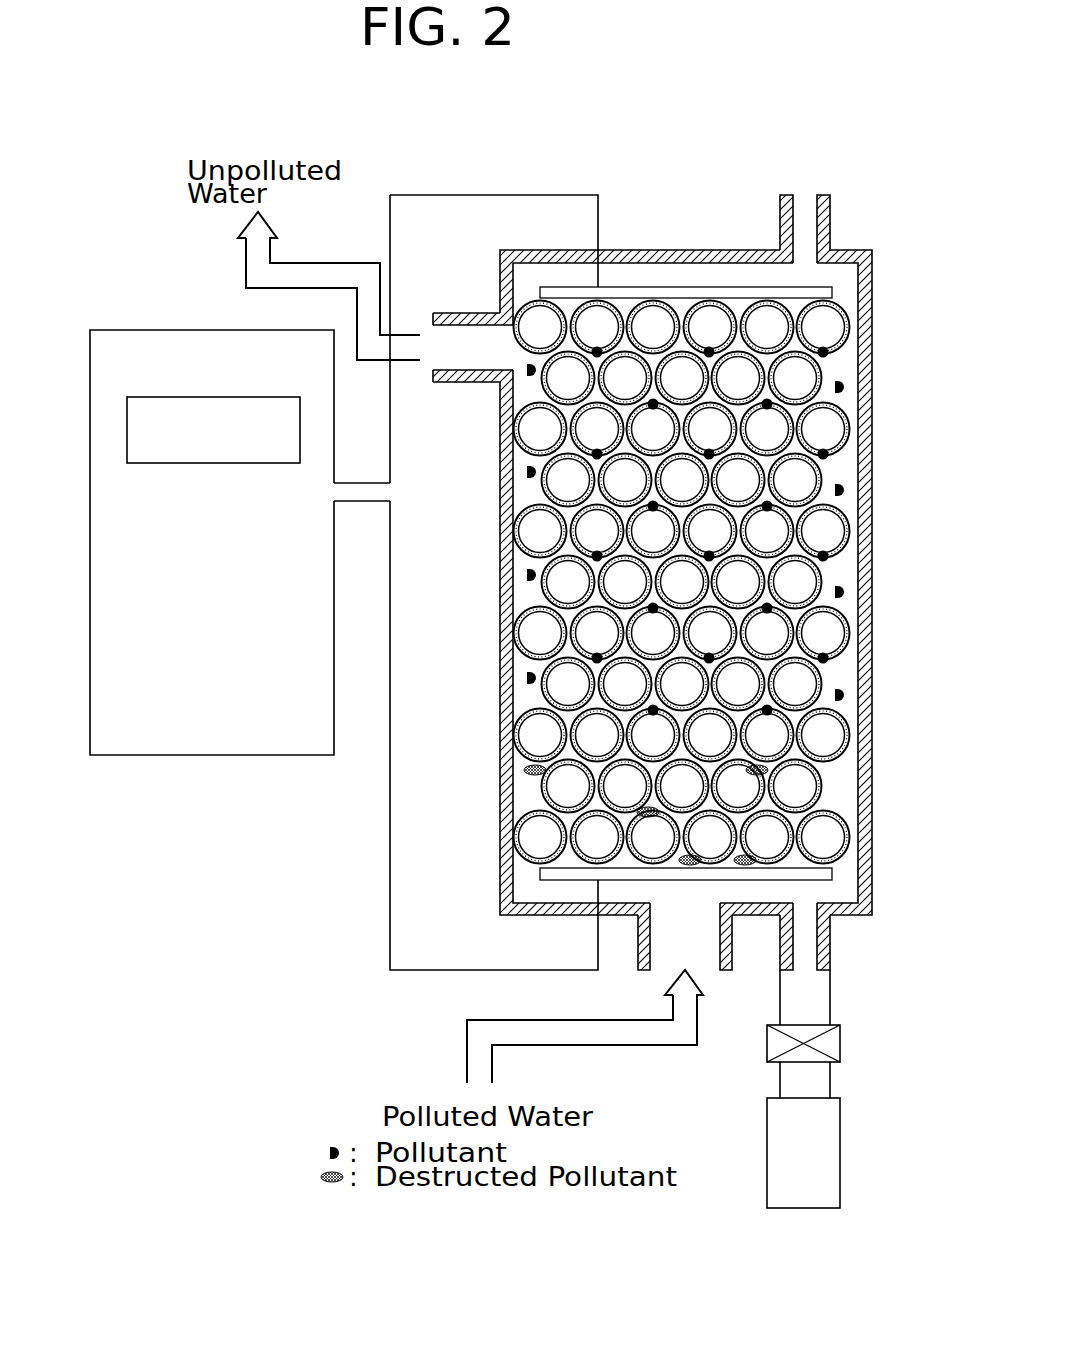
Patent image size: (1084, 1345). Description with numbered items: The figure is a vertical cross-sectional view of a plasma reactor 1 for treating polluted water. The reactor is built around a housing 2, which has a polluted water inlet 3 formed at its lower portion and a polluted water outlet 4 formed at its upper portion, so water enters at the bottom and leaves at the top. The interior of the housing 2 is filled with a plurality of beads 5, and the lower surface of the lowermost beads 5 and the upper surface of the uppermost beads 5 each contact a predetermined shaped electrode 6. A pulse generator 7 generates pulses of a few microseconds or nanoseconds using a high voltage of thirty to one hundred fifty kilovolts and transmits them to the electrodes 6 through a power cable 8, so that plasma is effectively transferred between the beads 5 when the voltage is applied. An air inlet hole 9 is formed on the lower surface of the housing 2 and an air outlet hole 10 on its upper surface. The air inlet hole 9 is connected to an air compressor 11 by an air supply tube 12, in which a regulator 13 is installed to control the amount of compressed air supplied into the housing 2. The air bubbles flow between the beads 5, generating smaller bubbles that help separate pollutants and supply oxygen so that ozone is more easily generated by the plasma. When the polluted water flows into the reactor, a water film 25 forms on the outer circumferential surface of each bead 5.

The plasma reactor 1 is at (690, 594).
The housing 2 is at (870, 467).
The polluted water inlet 3 is at (663, 963).
The polluted water outlet 4 is at (455, 338).
The beads 5 is at (530, 833).
The electrodes 6 is at (703, 293).
The pulse generator 7 is at (218, 747).
The power cable 8 is at (388, 469).
The air inlet hole 9 is at (808, 945).
The air outlet hole 10 is at (812, 218).
The air compressor 11 is at (837, 1170).
The air supply tube 12 is at (828, 963).
The regulator 13 is at (837, 1050).
The water film 25 is at (506, 652).